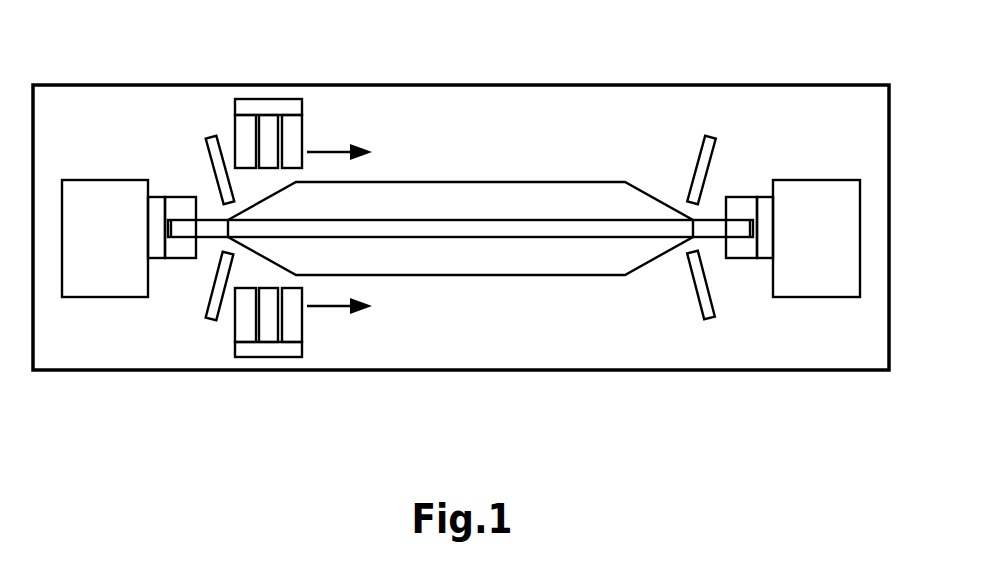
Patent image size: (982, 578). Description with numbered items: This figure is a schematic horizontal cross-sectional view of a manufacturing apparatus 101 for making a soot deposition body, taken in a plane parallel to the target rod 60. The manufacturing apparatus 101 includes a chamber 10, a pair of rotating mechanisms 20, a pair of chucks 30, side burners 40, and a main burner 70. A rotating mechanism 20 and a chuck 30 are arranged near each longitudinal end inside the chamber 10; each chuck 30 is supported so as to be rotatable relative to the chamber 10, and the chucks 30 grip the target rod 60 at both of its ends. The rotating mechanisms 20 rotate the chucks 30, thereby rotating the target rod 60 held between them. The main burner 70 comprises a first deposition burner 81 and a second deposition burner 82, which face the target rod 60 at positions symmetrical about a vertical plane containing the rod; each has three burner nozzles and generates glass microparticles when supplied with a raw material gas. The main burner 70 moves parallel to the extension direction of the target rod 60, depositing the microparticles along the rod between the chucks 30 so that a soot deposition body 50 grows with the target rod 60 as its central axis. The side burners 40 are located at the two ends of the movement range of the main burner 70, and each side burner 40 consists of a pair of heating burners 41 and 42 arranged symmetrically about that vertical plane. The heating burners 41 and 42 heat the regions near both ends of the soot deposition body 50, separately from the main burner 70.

The manufacturing apparatus 101 is at (82, 44).
The chamber 10 is at (483, 85).
The rotating mechanism 20 is at (103, 180).
The chuck 30 is at (180, 196).
The side burner 40 is at (459, 183).
The heating burner 41 is at (208, 305).
The heating burner 42 is at (206, 144).
The soot deposition body 50 is at (522, 181).
The target rod 60 is at (467, 219).
The main burner 70 is at (310, 192).
The first deposition burner 81 is at (302, 320).
The second deposition burner 82 is at (302, 136).